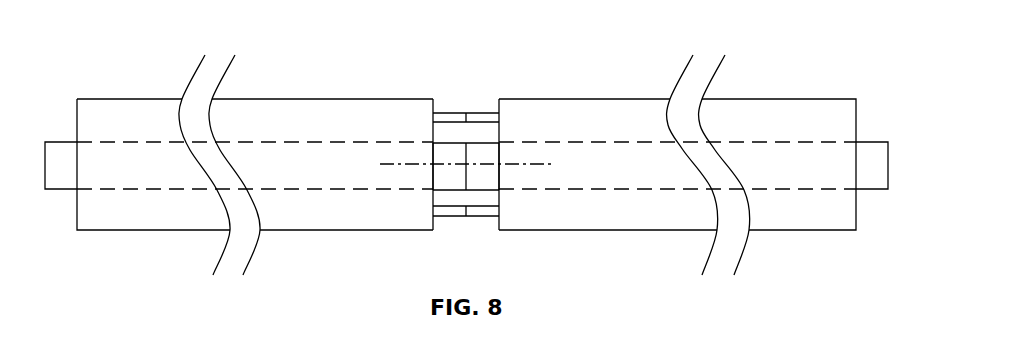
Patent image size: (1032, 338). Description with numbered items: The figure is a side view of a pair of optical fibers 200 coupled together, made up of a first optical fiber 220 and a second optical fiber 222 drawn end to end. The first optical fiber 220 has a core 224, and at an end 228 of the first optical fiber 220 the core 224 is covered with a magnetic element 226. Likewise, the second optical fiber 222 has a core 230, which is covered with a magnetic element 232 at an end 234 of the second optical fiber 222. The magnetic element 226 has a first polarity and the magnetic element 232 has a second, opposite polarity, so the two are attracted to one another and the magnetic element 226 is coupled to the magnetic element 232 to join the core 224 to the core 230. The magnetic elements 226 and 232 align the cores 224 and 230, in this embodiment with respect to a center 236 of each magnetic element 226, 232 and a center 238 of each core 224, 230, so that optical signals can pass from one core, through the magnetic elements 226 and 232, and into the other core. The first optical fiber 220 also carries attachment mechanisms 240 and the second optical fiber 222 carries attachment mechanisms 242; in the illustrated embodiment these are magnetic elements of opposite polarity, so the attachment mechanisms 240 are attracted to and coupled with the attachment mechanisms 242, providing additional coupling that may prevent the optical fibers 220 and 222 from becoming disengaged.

The pair of optical fibers 200 is at (296, 30).
The first optical fiber 220 is at (254, 90).
The second optical fiber 222 is at (767, 90).
The core 224 is at (157, 142).
The magnetic element 226 is at (450, 152).
The end 228 is at (410, 90).
The core 230 is at (777, 142).
The magnetic element 232 is at (482, 152).
The end 234 is at (540, 92).
The center 236 is at (450, 165).
The center 238 is at (402, 163).
The attachment mechanisms 240 is at (452, 210).
The attachment mechanisms 242 is at (472, 212).